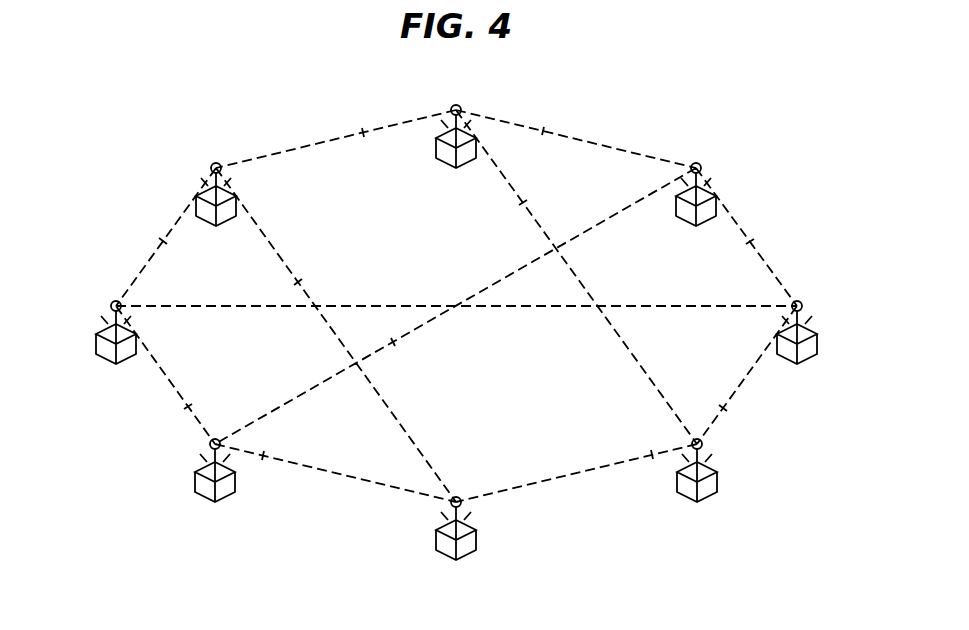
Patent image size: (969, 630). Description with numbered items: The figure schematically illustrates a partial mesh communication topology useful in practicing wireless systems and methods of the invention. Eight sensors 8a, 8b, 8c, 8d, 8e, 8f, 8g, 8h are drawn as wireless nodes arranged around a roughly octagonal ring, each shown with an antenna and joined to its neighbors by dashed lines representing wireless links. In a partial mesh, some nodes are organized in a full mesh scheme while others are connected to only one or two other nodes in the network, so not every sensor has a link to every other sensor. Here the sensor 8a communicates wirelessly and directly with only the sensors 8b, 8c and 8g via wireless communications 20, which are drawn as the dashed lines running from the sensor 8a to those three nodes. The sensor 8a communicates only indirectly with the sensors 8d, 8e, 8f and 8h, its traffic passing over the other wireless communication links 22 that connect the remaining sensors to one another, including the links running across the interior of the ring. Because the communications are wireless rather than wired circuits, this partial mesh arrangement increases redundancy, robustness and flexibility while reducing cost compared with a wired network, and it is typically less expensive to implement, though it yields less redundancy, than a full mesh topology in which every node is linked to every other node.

The sensor 8a is at (465, 150).
The sensor 8b is at (200, 205).
The sensor 8c is at (712, 205).
The sensor 8d is at (105, 347).
The sensor 8e is at (808, 346).
The sensor 8f is at (205, 482).
The sensor 8g is at (708, 483).
The sensor 8h is at (466, 542).
The direct wireless link 20 is at (363, 133).
The wireless communication link 22 is at (164, 242).